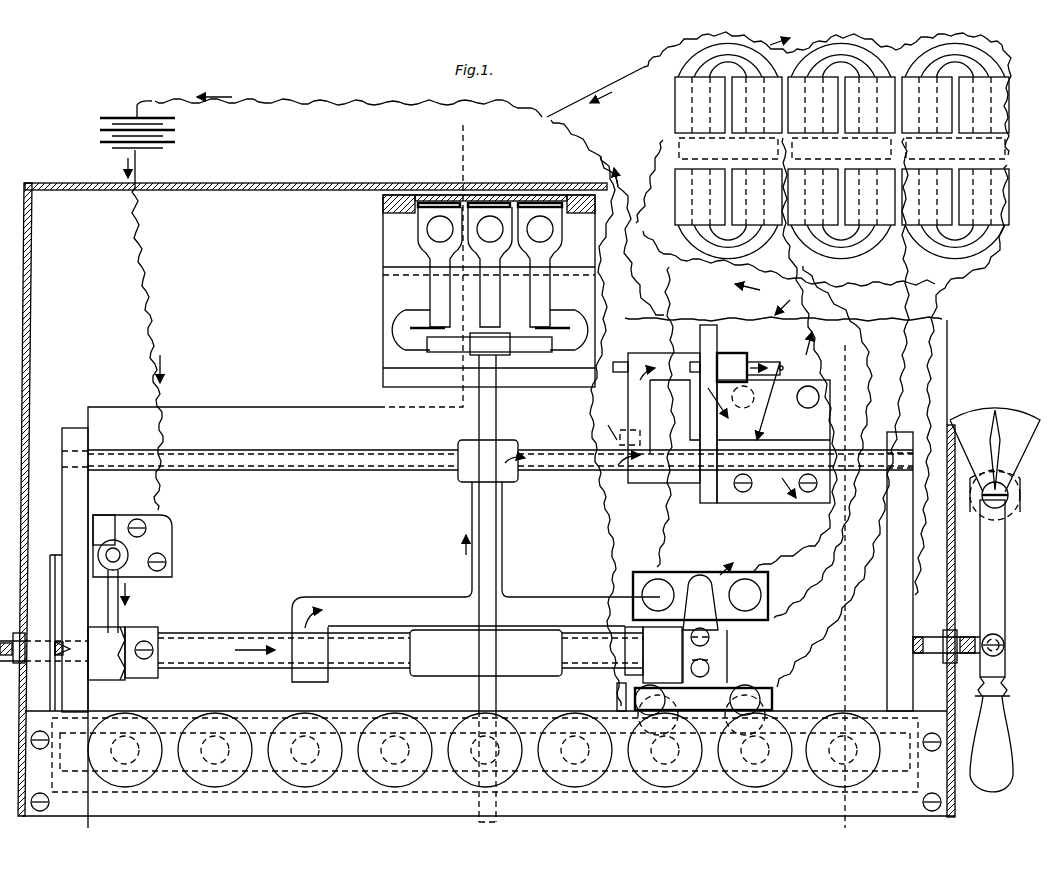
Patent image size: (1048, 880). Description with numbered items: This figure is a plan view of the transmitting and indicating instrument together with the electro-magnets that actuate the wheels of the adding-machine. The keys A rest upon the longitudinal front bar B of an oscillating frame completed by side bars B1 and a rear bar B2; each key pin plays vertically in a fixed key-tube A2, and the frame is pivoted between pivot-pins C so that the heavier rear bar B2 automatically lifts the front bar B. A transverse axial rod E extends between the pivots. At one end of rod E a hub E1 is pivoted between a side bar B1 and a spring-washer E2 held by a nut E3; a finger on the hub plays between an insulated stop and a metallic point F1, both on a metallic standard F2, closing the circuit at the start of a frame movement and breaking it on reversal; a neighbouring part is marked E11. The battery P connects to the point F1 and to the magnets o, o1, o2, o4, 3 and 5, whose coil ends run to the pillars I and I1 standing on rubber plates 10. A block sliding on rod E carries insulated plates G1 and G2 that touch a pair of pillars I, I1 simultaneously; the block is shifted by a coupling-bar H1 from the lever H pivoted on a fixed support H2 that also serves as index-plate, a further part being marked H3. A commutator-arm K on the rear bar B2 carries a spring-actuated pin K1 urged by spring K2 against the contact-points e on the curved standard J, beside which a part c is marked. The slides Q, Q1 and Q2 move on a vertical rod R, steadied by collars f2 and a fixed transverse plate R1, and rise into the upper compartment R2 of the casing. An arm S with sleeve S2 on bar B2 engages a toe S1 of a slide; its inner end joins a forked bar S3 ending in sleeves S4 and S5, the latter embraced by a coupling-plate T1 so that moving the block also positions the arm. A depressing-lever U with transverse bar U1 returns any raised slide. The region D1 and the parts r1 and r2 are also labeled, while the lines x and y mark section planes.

The electric battery P is at (122, 305).
The front bar B is at (375, 712).
The keys A is at (488, 763).
The key-tube A2 is at (232, 760).
The section line x x is at (273, 474).
The section line y y is at (842, 583).
The upper compartment R2 is at (384, 200).
The slide Q is at (540, 203).
The slide Q1 is at (490, 203).
The slide Q2 is at (452, 203).
The vertical rod R is at (490, 267).
The second collar f2 is at (420, 236).
The fixed transverse plate R1 is at (489, 267).
The toe S1 is at (486, 297).
The arm S is at (472, 340).
The transverse horizontal bar U1 is at (489, 345).
The depressing-lever U is at (482, 428).
The sleeve S2 is at (488, 461).
The rear bar B2 is at (500, 460).
The opening D1 is at (482, 539).
The forked bar S3 is at (476, 612).
The sleeve S4 is at (310, 639).
The axial rod E is at (400, 653).
The side bar B1 is at (903, 548).
The metallic point F1 is at (135, 552).
The metallic standard F2 is at (110, 542).
The hub E1 is at (110, 601).
The bracket E11 is at (95, 678).
The spring-washer E2 is at (142, 641).
The nut E3 is at (148, 678).
The commutator-arm K is at (659, 418).
The spring-actuated pin K1 is at (620, 362).
The spring K2 is at (620, 425).
The curved standard J is at (712, 340).
The contact-points e is at (750, 362).
The magnet frame c is at (760, 432).
The rubber plates 10 is at (707, 631).
The metallic pillar I is at (701, 650).
The metallic pillar I1 is at (650, 700).
The insulated plate G1 is at (705, 629).
The insulated plate G2 is at (705, 695).
The sleeve S5 is at (662, 655).
The stop T1 is at (625, 652).
The contact r1 is at (595, 712).
The post r2 is at (617, 694).
The pivot-pins C is at (978, 637).
The lever H is at (992, 588).
The coupling-bar H1 is at (980, 665).
The fixed support H2 is at (997, 439).
The pivot H3 is at (1012, 510).
The magnet o is at (728, 150).
The magnet o1 is at (880, 102).
The magnet o2 is at (841, 150).
The magnet o4 is at (955, 150).
The magnet 3 is at (890, 80).
The magnet 5 is at (995, 90).